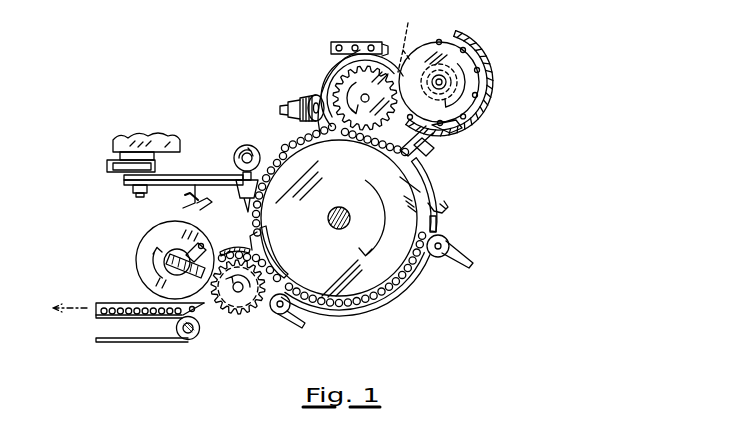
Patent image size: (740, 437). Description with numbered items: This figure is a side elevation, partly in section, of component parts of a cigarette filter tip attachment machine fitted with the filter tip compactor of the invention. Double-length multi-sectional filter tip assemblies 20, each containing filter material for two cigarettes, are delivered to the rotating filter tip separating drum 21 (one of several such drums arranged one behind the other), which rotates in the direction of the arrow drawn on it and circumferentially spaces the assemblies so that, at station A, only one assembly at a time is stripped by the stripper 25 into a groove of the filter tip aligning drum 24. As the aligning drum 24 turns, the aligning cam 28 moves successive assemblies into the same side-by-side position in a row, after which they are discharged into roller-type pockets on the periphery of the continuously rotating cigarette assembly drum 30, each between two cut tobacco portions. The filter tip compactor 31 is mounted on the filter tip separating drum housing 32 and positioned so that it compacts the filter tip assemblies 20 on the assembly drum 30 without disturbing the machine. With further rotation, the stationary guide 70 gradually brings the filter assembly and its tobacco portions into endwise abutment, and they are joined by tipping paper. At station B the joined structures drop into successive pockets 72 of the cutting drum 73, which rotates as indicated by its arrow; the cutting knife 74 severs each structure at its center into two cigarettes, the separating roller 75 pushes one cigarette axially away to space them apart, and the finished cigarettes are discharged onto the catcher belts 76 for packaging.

The multi-sectional filter tip assembly 20 is at (439, 42).
The filter tip separating drum 21 is at (468, 62).
The filter tip aligning drum 24 is at (332, 84).
The stripper 25 is at (408, 44).
The aligning cam 28 is at (312, 95).
The cigarette assembly drum 30 is at (406, 188).
The filter tip compactor 31 is at (430, 157).
The filter tip separating drum housing 32 is at (486, 110).
The stationary guide 70 is at (430, 216).
The pocket 72 is at (223, 322).
The cutting drum 73 is at (282, 313).
The cutting knife 74 is at (160, 236).
The separating roller 75 is at (202, 245).
The catcher belt 76 is at (133, 345).
The station A is at (416, 97).
The station B is at (293, 266).